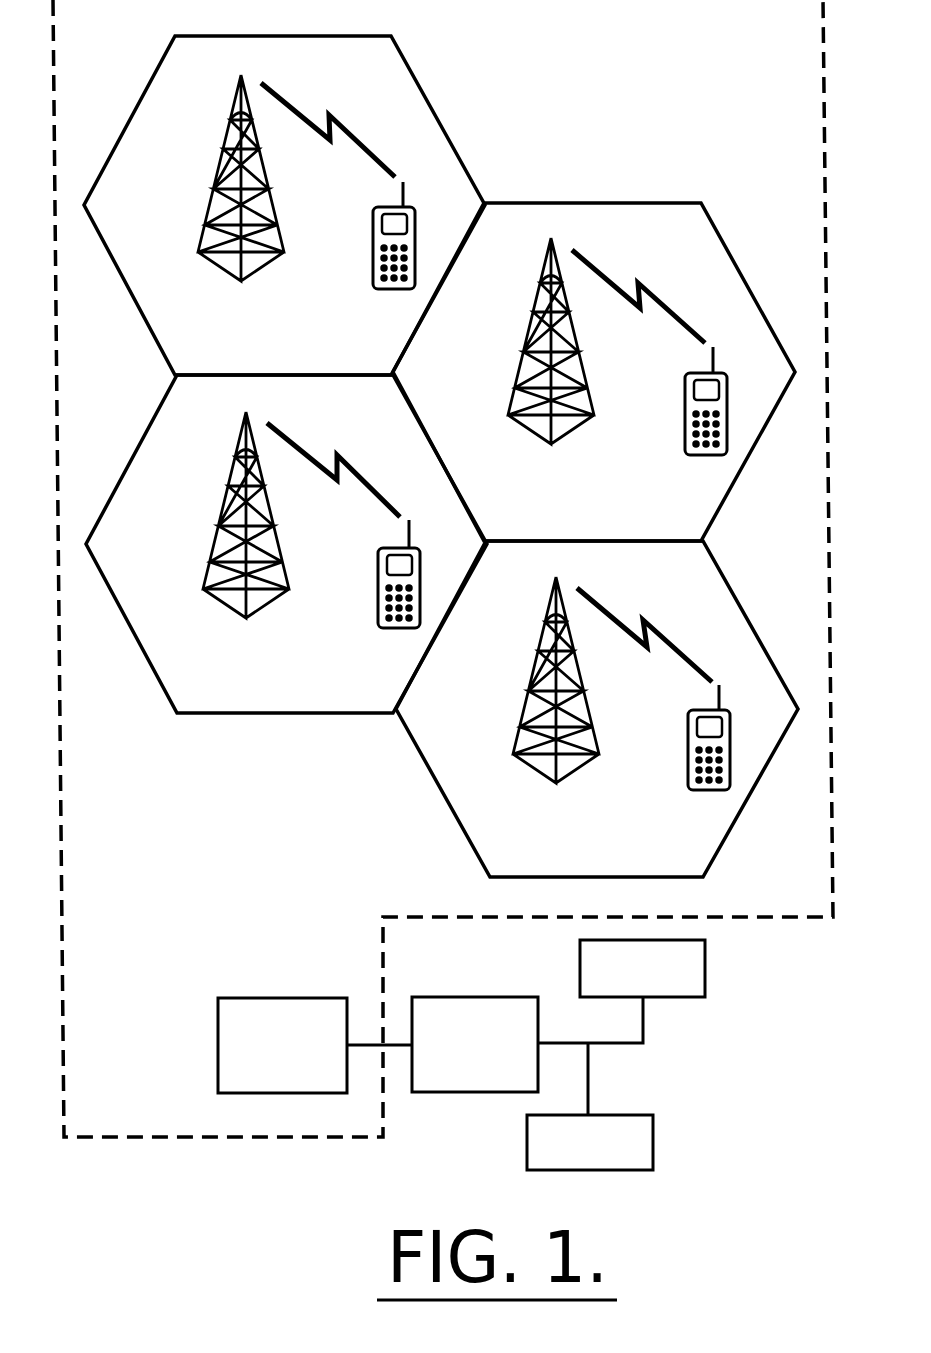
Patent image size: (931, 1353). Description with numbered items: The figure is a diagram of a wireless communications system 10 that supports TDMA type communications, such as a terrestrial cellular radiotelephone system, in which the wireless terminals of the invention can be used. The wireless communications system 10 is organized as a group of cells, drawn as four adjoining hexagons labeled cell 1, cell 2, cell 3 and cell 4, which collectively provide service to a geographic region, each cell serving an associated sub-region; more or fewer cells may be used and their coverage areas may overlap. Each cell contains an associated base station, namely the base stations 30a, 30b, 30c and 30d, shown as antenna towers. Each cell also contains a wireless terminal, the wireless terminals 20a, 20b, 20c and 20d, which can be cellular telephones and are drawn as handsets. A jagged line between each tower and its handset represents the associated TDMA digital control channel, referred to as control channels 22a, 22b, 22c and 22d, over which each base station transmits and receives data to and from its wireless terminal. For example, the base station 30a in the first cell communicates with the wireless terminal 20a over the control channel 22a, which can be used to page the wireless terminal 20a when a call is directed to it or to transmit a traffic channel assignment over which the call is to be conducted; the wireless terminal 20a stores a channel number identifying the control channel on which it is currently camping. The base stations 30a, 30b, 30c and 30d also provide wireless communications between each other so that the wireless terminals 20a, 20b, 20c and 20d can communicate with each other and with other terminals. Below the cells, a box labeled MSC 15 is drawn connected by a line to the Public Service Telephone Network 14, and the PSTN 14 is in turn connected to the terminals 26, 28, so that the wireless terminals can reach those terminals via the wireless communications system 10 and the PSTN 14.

The wireless communications system 10 is at (790, 45).
The cell 1 is at (178, 88).
The cell 2 is at (486, 256).
The cell 3 is at (181, 428).
The cell 4 is at (492, 593).
The base station 30a is at (243, 281).
The base station 30b is at (555, 447).
The base station 30c is at (247, 620).
The base station 30d is at (560, 780).
The control channel 22a is at (358, 148).
The control channel 22b is at (667, 313).
The control channel 22c is at (363, 490).
The control channel 22d is at (675, 652).
The wireless terminal 20a is at (373, 267).
The wireless terminal 20b is at (683, 433).
The wireless terminal 20c is at (377, 607).
The wireless terminal 20d is at (688, 768).
The mobile switching center (MSC) 15 is at (302, 1080).
The Public Service Telephone Network 14 is at (452, 1078).
The terminal 26 is at (620, 983).
The terminal 28 is at (566, 1157).